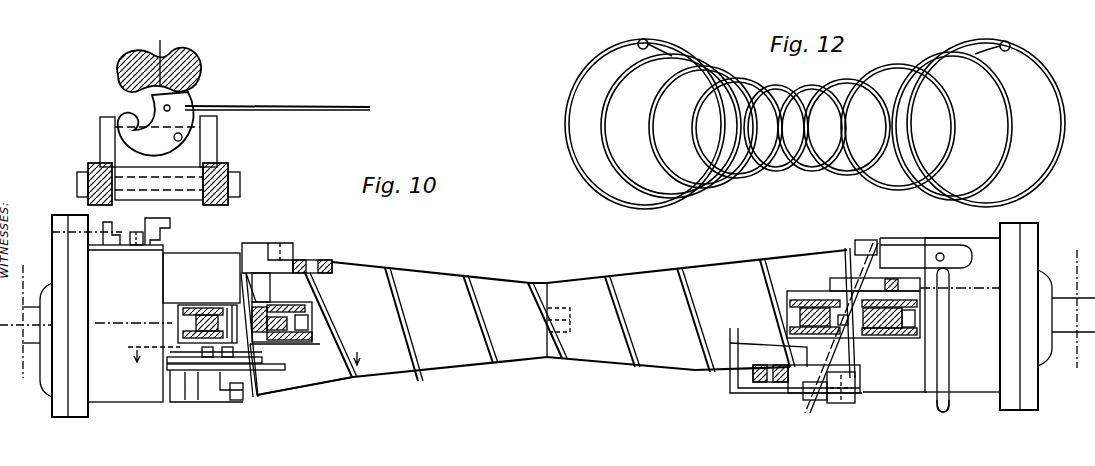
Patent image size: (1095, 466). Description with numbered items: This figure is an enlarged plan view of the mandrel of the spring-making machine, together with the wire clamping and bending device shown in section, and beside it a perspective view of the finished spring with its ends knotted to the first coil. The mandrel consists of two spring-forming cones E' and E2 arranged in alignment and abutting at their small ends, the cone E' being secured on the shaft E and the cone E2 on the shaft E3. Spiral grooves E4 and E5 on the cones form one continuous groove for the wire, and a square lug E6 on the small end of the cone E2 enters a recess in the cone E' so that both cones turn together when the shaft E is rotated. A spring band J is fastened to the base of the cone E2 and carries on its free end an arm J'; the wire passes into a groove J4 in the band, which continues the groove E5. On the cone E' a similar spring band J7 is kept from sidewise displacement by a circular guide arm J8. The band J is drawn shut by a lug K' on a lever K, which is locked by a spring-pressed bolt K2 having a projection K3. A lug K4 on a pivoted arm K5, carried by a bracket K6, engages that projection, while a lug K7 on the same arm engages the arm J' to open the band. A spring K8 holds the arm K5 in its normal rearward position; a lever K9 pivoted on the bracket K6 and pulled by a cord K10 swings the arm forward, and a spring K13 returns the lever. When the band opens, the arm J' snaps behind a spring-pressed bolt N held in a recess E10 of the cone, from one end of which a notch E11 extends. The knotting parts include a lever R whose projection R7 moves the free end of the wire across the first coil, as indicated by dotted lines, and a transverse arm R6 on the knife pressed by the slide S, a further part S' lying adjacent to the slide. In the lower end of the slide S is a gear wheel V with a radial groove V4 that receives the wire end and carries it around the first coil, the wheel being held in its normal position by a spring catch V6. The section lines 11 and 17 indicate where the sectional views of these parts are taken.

The shaft E is at (1047, 316).
The spring-forming cone E' is at (552, 317).
The spring-forming cone E2 is at (358, 266).
The shaft E3 is at (38, 333).
The spiral groove E4 is at (700, 326).
The spiral groove E5 is at (401, 331).
The square lug E6 is at (552, 310).
The recess E10 is at (876, 313).
The notch E11 is at (803, 347).
The spring band J is at (206, 391).
The arm J' is at (570, 308).
The groove J4 is at (236, 392).
The spring band J7 is at (922, 384).
The circular guide arm J8 is at (878, 262).
The lever K is at (139, 258).
The lug K' is at (167, 231).
The spring-pressed bolt K2 is at (118, 255).
The projection K3 is at (100, 237).
The lug K4 is at (108, 128).
The pivoted arm K5 is at (180, 155).
The bracket K6 is at (195, 75).
The lug K7 is at (210, 133).
The spring K8 is at (145, 100).
The lever K9 is at (192, 100).
The cord K10 is at (330, 104).
The spring K13 is at (152, 42).
The spring-pressed bolt N is at (200, 350).
The lever R is at (286, 256).
The transverse arm R6 is at (738, 343).
The projection R7 is at (245, 289).
The slide S is at (301, 364).
The slide housing S' is at (876, 314).
The gear wheel V is at (262, 312).
The radial groove V4 is at (270, 340).
The spring catch V6 is at (262, 298).
The section line 11 is at (544, 323).
The section line 17 is at (245, 351).